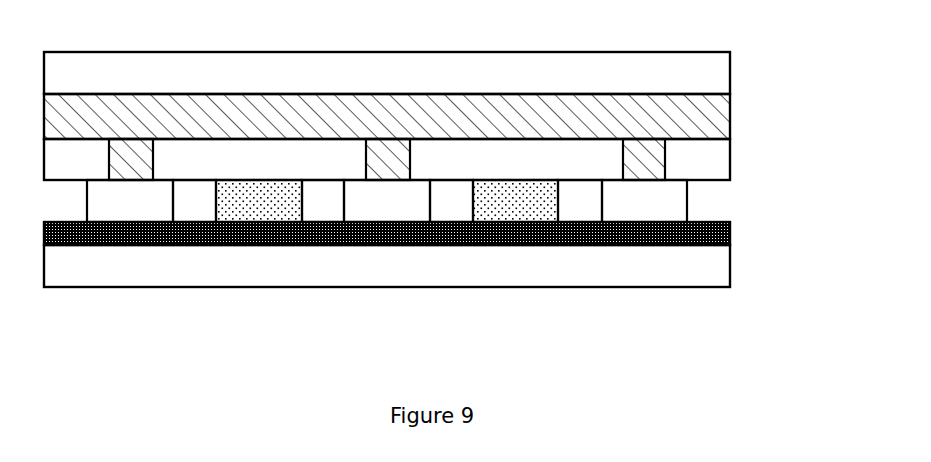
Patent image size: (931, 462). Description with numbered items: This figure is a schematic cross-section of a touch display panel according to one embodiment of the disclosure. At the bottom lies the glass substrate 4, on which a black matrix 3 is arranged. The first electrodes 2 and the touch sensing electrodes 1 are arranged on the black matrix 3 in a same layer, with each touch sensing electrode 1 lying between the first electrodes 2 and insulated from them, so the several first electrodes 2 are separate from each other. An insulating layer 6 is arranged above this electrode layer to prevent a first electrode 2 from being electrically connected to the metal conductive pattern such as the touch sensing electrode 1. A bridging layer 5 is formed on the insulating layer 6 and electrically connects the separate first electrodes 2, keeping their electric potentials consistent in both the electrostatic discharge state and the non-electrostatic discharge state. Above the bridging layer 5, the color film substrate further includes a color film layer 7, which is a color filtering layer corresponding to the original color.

The touch sensing electrode 1 is at (387, 275).
The first electrode 2 is at (687, 202).
The black matrix 3 is at (730, 231).
The glass substrate 4 is at (730, 269).
The bridging layer 5 is at (730, 116).
The insulating layer 6 is at (730, 158).
The color film layer 7 is at (730, 73).